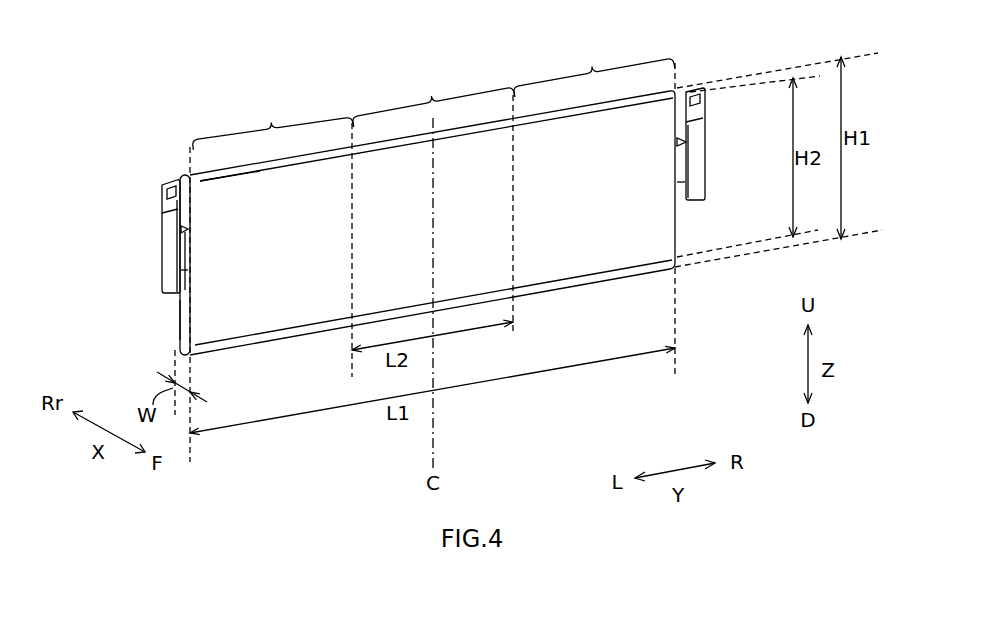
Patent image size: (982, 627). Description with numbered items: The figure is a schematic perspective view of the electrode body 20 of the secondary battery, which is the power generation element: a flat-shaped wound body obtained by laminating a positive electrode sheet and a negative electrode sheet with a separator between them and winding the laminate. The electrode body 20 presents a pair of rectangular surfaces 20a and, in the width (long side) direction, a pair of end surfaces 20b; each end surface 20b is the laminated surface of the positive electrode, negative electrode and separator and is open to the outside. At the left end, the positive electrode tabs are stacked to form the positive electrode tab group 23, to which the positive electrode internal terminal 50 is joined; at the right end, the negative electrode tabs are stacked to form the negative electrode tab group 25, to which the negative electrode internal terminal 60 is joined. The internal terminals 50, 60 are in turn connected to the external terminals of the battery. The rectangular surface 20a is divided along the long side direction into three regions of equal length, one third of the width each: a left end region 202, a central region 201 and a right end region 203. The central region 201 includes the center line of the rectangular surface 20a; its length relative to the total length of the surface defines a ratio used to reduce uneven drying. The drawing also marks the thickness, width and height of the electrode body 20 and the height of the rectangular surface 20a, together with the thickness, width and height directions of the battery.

The electrode body 20 is at (650, 85).
The rectangular surface 20a is at (212, 192).
The end surface 20b is at (177, 302).
The positive electrode tab group 23 is at (187, 262).
The negative electrode tab group 25 is at (683, 183).
The positive electrode internal terminal 50 is at (160, 257).
The negative electrode internal terminal 60 is at (707, 155).
The central region 201 is at (434, 96).
The left end region 202 is at (273, 123).
The right end region 203 is at (594, 67).